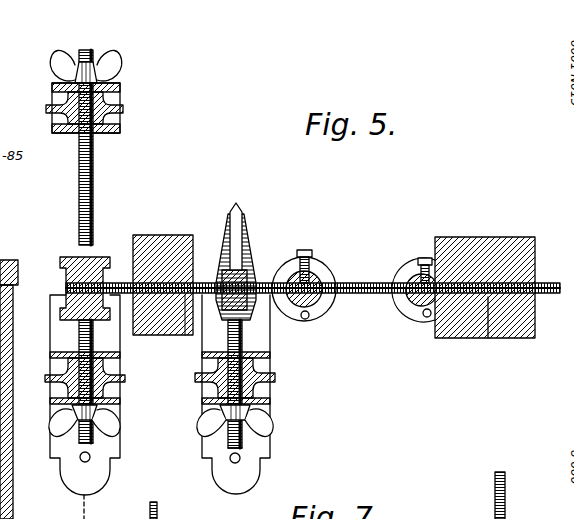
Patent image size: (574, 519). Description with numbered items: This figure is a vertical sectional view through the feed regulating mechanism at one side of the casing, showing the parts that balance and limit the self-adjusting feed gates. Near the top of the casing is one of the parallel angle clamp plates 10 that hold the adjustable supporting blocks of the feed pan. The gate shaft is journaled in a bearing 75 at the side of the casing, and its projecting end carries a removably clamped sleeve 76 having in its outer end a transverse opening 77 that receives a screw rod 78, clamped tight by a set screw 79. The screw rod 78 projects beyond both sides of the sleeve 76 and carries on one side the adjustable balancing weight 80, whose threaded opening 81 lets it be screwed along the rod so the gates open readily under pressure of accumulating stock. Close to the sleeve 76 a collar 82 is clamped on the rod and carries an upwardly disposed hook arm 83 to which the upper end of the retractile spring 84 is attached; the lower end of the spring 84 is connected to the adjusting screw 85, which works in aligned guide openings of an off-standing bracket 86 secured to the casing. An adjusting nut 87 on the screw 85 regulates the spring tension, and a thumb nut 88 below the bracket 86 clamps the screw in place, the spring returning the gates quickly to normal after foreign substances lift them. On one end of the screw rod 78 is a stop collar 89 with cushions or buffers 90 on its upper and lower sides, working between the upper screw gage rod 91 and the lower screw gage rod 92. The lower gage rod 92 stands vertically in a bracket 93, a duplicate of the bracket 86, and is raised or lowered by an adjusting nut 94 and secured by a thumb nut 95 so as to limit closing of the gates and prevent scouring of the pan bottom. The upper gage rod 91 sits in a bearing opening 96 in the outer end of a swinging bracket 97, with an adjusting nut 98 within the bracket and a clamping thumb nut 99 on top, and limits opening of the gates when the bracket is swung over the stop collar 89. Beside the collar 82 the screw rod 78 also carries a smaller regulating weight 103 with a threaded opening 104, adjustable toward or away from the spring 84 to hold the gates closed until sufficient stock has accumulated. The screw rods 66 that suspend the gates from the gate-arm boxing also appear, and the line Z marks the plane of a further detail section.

The angle clamp plates 10 is at (13, 377).
The screw rods 66 is at (505, 512).
The bearings 75 is at (352, 279).
The sleeves 76 is at (292, 264).
The transverse openings 77 is at (310, 310).
The screw rod 78 is at (553, 285).
The set screw 79 is at (306, 250).
The adjustable balancing weight 80 is at (490, 237).
The threaded opening 81 is at (488, 338).
The collar 82 is at (242, 322).
The hook arm 83 is at (240, 215).
The retractile spring 84 is at (226, 222).
The adjusting screw 85 is at (249, 378).
The off-standing bracket 86 is at (230, 470).
The adjusting nut 87 is at (272, 377).
The thumb nut 88 is at (265, 428).
The stop collars 89 is at (79, 287).
The cushions or buffers 90 is at (100, 257).
The upper screw gage rod 91 is at (93, 175).
The lower screw gage rod 92 is at (90, 445).
The off-standing bracket 93 is at (78, 470).
The adjusting nut 94 is at (125, 379).
The thumb nut 95 is at (115, 428).
The bearing openings 96 is at (97, 123).
The swinging brackets 97 is at (120, 88).
The adjusting nuts 98 is at (123, 109).
The clamping thumb nuts 99 is at (120, 58).
The smaller regulating weights 103 is at (152, 235).
The threaded openings 104 is at (185, 335).
The section line z—z Z is at (86, 50).